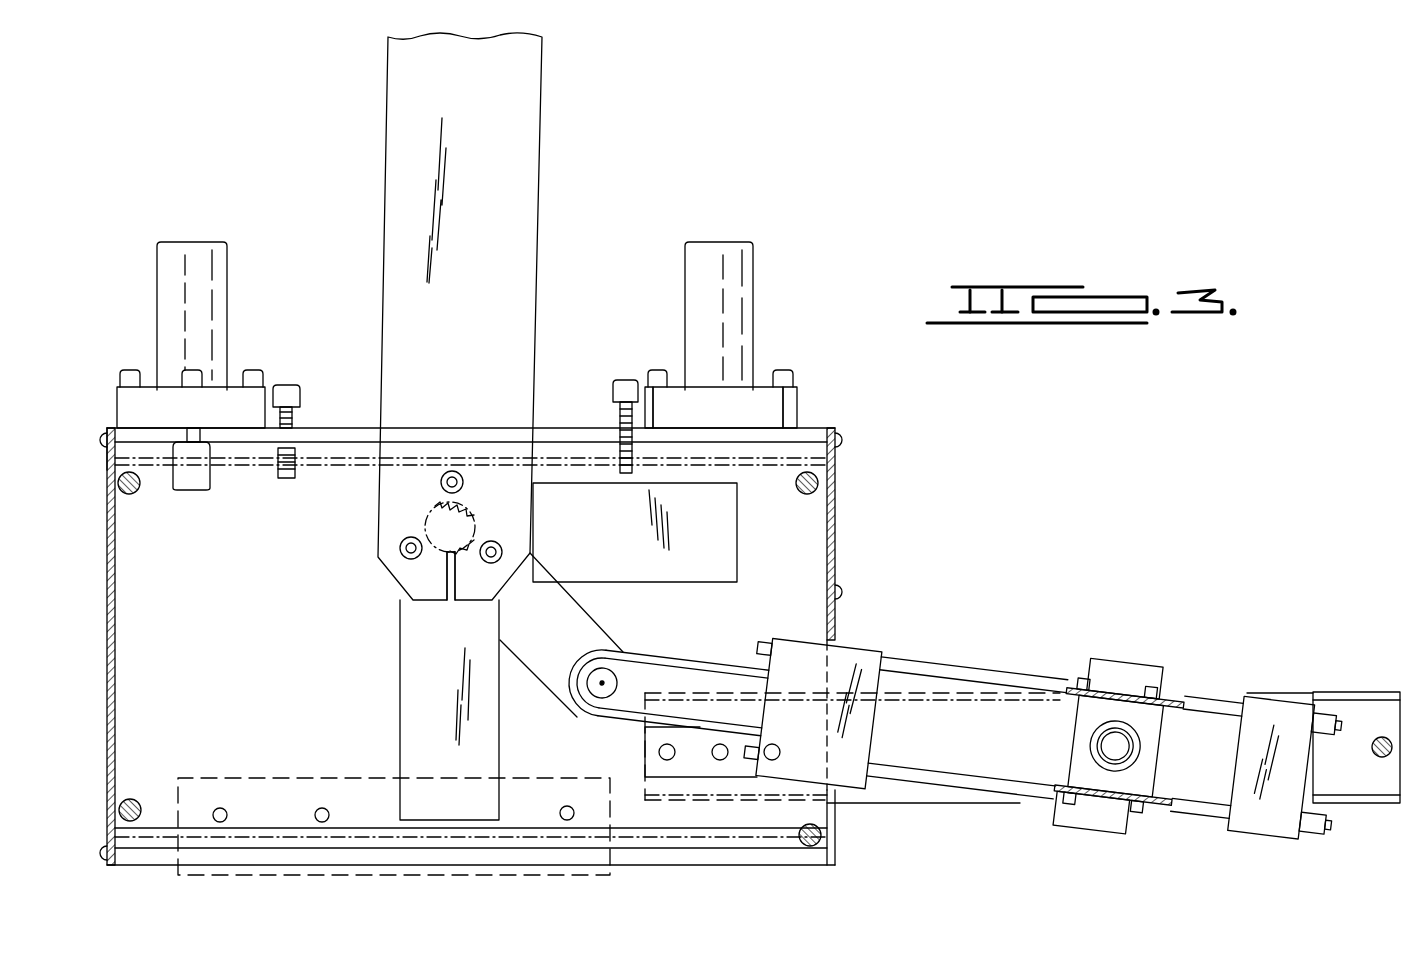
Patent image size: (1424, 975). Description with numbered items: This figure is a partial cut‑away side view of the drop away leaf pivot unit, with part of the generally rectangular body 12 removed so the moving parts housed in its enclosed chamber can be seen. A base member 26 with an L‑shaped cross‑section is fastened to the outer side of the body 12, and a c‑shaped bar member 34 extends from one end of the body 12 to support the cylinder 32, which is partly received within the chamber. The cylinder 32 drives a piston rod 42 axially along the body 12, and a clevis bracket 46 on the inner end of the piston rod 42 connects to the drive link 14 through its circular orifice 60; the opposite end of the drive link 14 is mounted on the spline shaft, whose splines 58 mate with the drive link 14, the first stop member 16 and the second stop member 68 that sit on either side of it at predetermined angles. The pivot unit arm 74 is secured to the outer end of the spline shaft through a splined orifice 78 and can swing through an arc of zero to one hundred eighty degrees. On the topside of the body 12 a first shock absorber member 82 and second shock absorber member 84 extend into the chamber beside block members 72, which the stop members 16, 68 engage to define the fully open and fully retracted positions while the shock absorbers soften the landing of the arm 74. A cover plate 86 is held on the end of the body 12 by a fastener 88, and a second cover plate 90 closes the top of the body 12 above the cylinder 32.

The body 12 is at (548, 425).
The drive link 14 is at (547, 607).
The first stop member 16 is at (412, 725).
The base member 26 is at (215, 778).
The cylinder 32 is at (978, 658).
The bar member 34 is at (1343, 692).
The piston rod 42 is at (717, 665).
The clevis bracket 46 is at (603, 697).
The splines 58 is at (437, 553).
The circular orifice 60 is at (620, 668).
The second stop member 68 is at (720, 535).
The block member 72 is at (288, 390).
The pivot unit arm 74 is at (518, 115).
The orifice 78 is at (443, 518).
The first shock absorber member 82 is at (743, 277).
The second shock absorber member 84 is at (205, 270).
The cover plate 86 is at (115, 577).
The fastener 88 is at (108, 432).
The second cover plate 90 is at (835, 472).